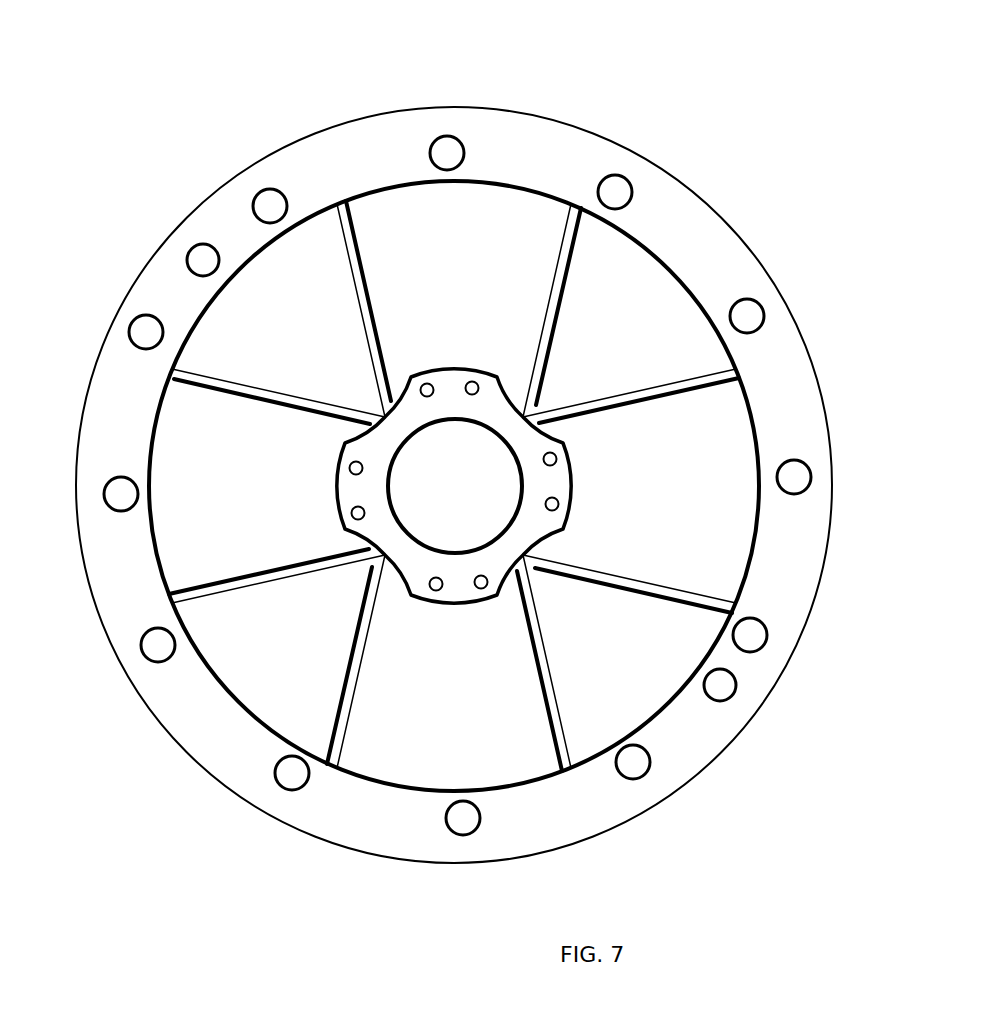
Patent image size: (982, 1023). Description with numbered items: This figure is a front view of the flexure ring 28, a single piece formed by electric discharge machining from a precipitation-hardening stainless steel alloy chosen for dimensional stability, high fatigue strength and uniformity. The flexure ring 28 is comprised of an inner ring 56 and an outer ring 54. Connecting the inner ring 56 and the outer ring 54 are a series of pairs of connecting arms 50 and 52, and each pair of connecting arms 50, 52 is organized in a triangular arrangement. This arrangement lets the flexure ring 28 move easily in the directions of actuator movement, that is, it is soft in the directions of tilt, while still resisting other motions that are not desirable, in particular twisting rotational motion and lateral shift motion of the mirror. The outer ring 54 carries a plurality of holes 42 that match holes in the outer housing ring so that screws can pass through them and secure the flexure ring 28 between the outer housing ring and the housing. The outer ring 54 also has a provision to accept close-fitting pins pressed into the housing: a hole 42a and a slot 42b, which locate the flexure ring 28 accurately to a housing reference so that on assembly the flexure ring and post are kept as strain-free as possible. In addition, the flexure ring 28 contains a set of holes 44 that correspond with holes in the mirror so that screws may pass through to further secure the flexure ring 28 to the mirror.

The flexure ring 28 is at (727, 248).
The holes 42 is at (136, 318).
The hole 42a is at (195, 244).
The slot 42b is at (731, 698).
The holes 44 is at (618, 456).
The connecting arm 50 is at (338, 268).
The connecting arm 52 is at (276, 393).
The outer ring 54 is at (378, 133).
The inner ring 56 is at (526, 412).